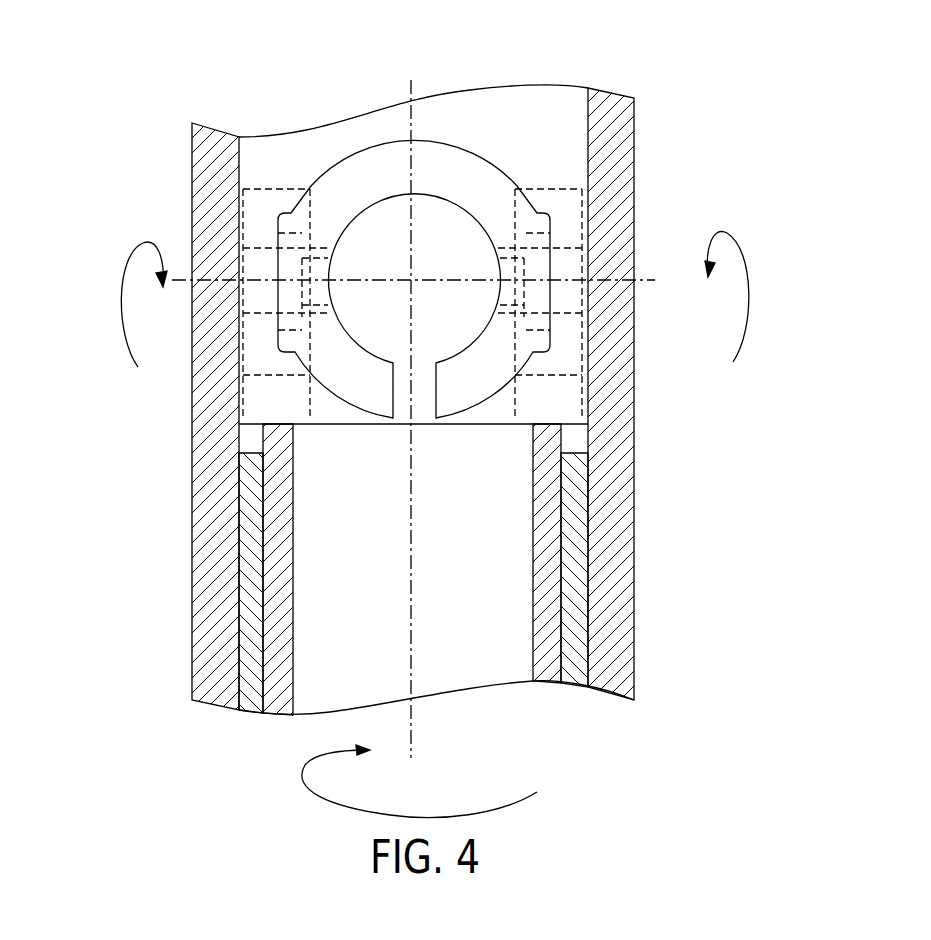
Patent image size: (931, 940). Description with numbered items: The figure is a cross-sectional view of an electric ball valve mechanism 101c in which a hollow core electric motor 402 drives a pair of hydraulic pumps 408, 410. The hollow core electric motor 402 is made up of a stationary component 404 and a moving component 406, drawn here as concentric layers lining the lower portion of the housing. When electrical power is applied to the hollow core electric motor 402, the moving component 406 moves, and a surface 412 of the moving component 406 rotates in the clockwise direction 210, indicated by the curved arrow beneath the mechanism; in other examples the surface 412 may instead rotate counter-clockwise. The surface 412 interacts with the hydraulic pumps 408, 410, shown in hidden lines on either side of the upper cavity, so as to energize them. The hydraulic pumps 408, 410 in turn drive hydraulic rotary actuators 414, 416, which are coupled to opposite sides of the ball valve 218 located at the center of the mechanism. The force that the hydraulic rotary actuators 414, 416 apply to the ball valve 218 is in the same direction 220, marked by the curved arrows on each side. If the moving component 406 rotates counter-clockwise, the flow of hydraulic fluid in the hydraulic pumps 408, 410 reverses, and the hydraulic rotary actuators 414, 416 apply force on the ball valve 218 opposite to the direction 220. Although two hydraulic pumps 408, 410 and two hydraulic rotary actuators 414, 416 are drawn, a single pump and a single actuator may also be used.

The electric ball valve mechanism 101c is at (645, 85).
The ball valve 218 is at (480, 170).
The hydraulic rotary actuator 414 is at (258, 268).
The hydraulic rotary actuator 416 is at (571, 270).
The hydraulic pump 408 is at (243, 357).
The hydraulic pump 410 is at (588, 352).
The surface 412 is at (270, 425).
The hollow core electric motor 402 is at (366, 601).
The stationary component 404 is at (252, 704).
The moving component 406 is at (275, 702).
The direction 220 is at (128, 287).
The clockwise direction 210 is at (337, 811).